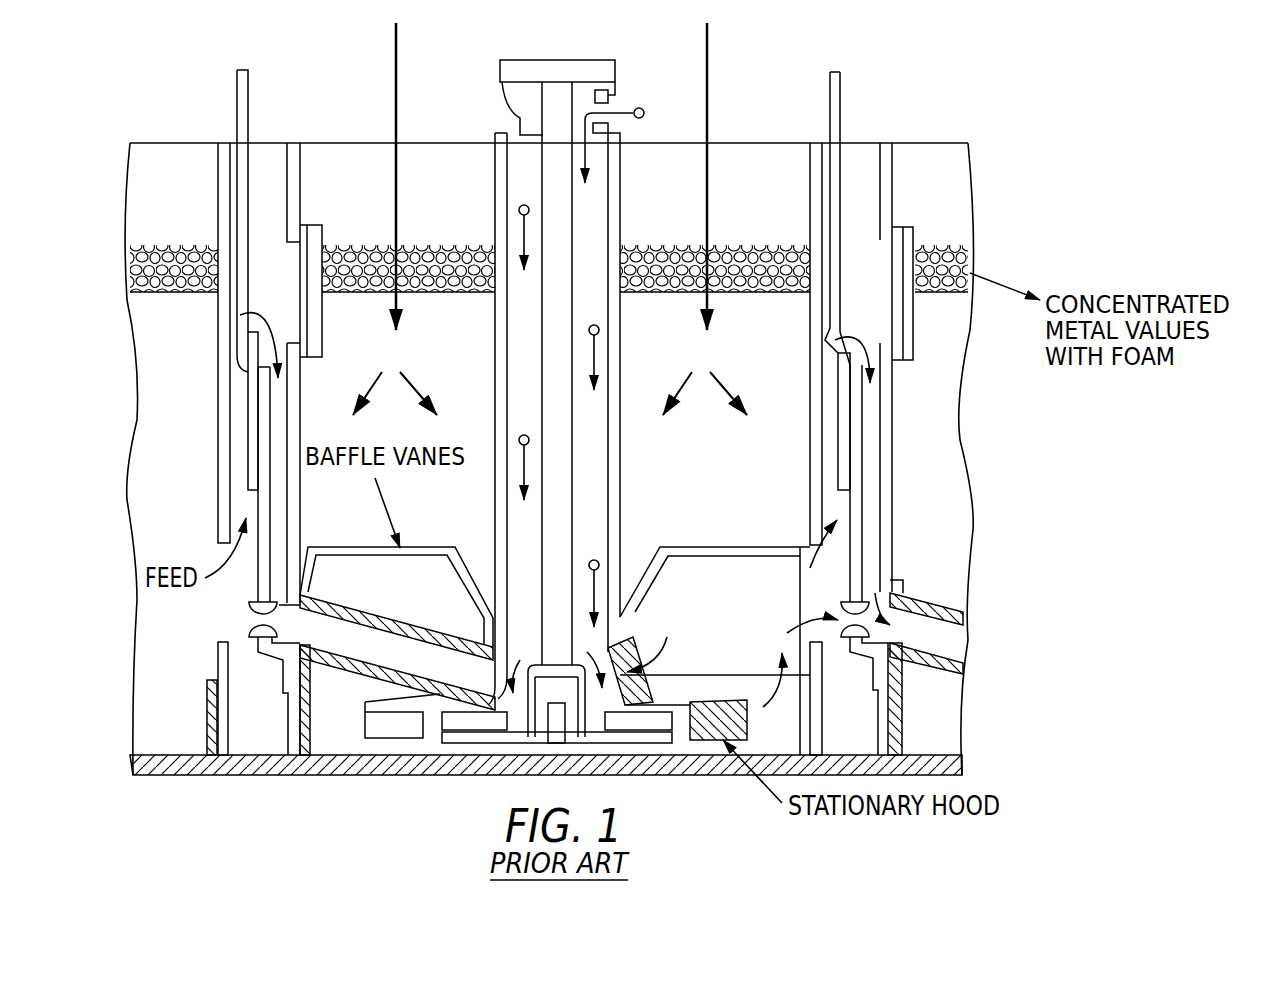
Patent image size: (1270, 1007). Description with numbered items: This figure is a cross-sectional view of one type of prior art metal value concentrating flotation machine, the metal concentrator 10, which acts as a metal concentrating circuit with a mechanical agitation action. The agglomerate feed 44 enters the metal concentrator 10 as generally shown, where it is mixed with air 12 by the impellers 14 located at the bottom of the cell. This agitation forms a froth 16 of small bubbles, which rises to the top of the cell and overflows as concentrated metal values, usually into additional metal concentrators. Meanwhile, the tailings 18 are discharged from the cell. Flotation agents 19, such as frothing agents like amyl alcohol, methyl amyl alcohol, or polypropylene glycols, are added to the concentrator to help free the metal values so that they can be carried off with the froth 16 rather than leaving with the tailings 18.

The metal concentrator 10 is at (1044, 233).
The air 12 is at (618, 105).
The impellers 14 is at (480, 742).
The froth 16 is at (745, 238).
The tailings 18 is at (918, 632).
The flotation agents 19 is at (550, 219).
The agglomerate feed 44 is at (245, 618).